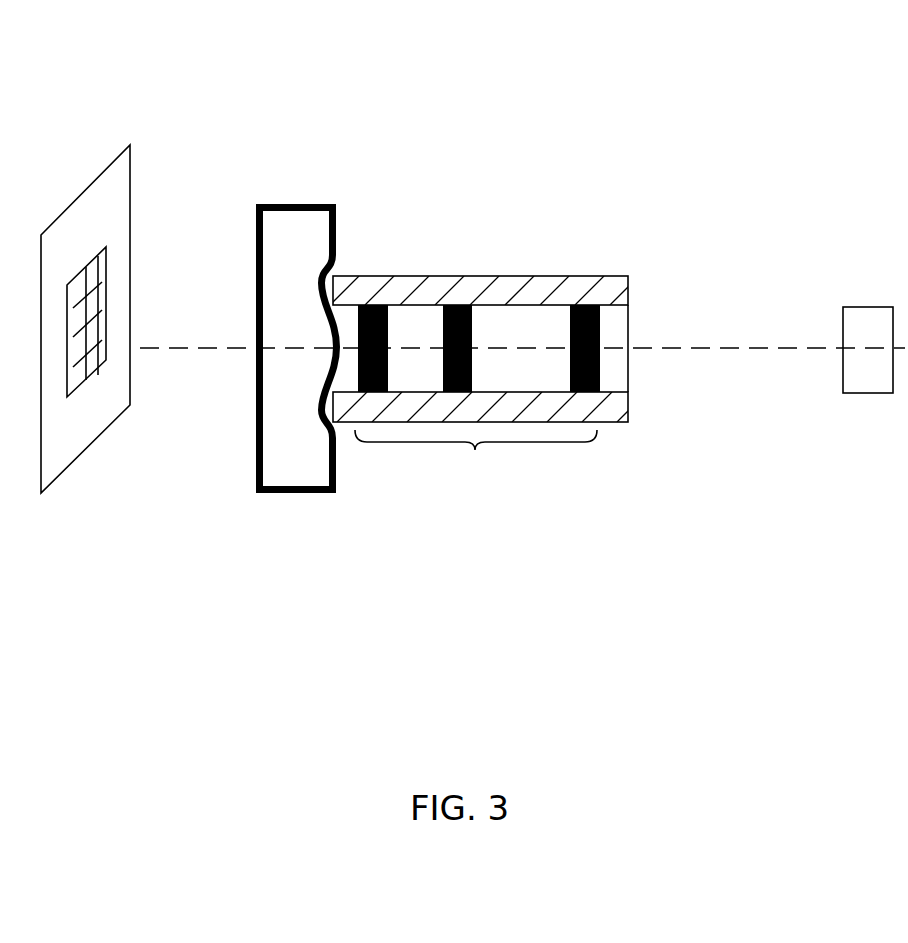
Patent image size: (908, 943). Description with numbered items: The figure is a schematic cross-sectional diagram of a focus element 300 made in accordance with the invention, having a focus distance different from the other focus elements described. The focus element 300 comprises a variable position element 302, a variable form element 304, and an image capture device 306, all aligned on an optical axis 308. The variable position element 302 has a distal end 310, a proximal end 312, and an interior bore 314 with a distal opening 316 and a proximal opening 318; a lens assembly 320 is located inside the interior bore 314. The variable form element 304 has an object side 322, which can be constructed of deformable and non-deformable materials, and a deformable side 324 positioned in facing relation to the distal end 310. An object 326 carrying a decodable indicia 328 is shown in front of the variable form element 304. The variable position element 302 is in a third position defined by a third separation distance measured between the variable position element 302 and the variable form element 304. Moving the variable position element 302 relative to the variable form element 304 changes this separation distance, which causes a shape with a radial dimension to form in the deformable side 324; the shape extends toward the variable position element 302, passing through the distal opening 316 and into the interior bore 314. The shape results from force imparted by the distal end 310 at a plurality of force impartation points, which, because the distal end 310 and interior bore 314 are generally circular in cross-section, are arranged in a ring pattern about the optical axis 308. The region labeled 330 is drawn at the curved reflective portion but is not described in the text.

The focus element 300 is at (772, 124).
The variable position element 302 is at (543, 268).
The variable form element 304 is at (303, 198).
The image capture device 306 is at (868, 350).
The optical axis 308 is at (752, 350).
The distal end 310 is at (300, 420).
The proximal end 312 is at (636, 323).
The interior bore 314 is at (336, 307).
The distal opening 316 is at (347, 384).
The proximal opening 318 is at (616, 378).
The lens assembly 320 is at (476, 456).
The object side 322 is at (255, 228).
The deformable side 324 is at (340, 233).
The object 326 is at (88, 187).
The decodable indicia 328 is at (78, 273).
The curved reflective region of mirror 330 is at (312, 377).